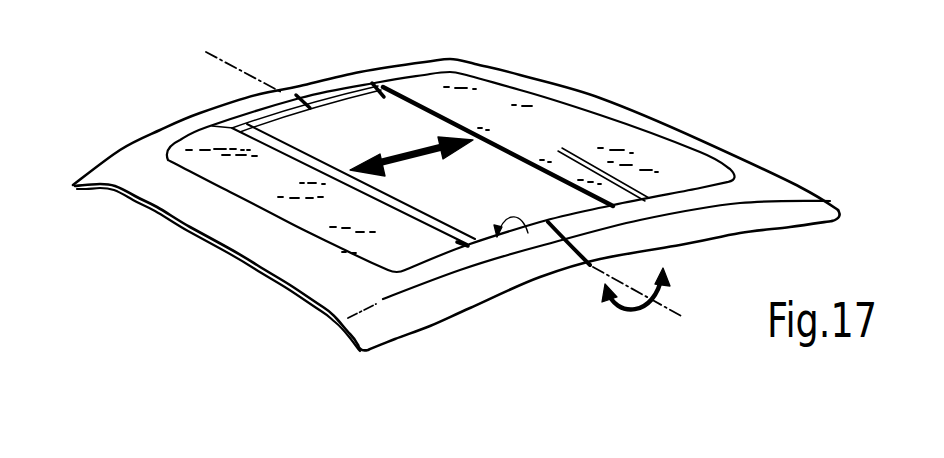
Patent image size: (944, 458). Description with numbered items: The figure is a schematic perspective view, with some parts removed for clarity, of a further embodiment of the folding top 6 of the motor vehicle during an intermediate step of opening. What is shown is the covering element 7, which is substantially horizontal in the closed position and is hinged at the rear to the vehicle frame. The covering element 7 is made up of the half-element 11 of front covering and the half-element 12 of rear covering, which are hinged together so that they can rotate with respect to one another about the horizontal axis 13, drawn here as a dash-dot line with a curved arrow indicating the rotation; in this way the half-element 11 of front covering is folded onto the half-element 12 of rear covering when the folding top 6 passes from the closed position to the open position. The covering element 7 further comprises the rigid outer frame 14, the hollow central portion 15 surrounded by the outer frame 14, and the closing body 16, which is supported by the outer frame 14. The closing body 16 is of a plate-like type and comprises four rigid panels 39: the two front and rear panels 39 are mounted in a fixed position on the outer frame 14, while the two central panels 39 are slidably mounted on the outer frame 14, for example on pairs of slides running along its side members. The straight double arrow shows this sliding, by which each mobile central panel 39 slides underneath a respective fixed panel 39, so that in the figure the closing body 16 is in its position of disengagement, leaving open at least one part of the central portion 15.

The folding top 6 is at (187, 263).
The covering element 7 is at (603, 320).
The half-element of front covering 11 is at (417, 344).
The half-element of rear covering 12 is at (787, 234).
The horizontal axis 13 is at (664, 320).
The rigid outer frame 14 is at (692, 232).
The hollow central portion 15 is at (528, 233).
The closing body 16 is at (609, 78).
The rigid panels 39 is at (187, 147).